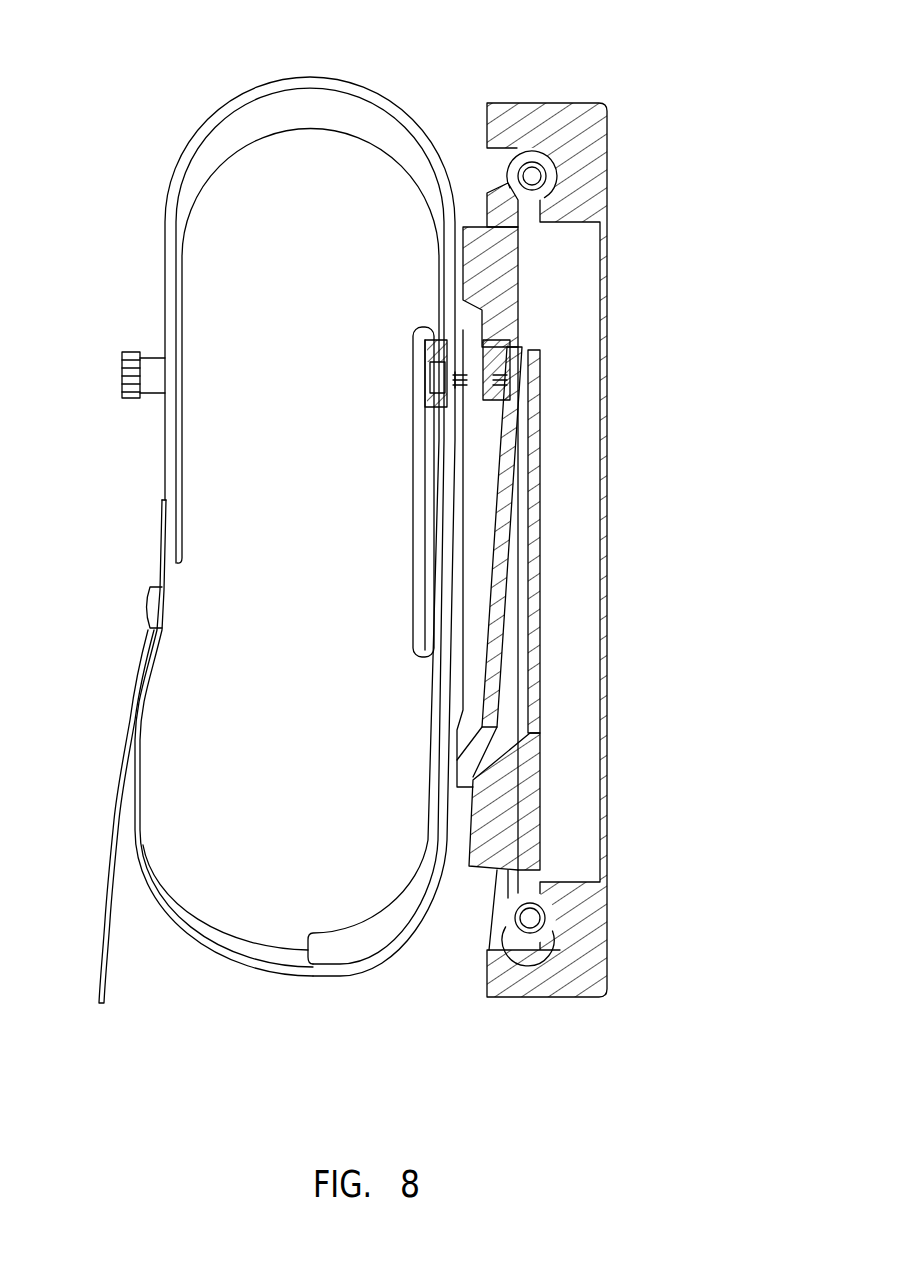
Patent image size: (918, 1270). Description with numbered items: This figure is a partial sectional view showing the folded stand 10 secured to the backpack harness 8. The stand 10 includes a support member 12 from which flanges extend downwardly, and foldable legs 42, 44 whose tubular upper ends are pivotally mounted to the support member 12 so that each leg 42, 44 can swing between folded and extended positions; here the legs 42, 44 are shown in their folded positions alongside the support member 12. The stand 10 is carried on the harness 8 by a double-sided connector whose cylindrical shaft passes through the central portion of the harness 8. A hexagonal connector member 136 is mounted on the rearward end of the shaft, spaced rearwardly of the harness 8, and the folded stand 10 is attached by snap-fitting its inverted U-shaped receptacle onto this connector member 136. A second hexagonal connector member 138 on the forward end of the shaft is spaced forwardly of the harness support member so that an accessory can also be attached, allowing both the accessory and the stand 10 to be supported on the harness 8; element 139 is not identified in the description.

The backpack harness 8 is at (218, 72).
The folding stand 10 is at (630, 150).
The support member 12 is at (618, 476).
The foldable leg 42 is at (530, 810).
The foldable leg 44 is at (512, 272).
The hexagonal connector member 136 is at (503, 344).
The hexagonal connector member 138 is at (425, 346).
The clip bar 139 is at (413, 512).